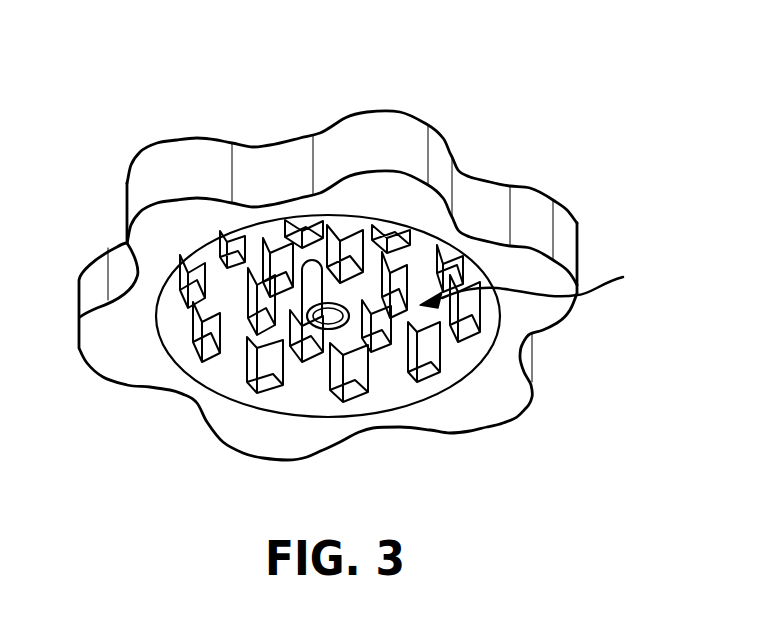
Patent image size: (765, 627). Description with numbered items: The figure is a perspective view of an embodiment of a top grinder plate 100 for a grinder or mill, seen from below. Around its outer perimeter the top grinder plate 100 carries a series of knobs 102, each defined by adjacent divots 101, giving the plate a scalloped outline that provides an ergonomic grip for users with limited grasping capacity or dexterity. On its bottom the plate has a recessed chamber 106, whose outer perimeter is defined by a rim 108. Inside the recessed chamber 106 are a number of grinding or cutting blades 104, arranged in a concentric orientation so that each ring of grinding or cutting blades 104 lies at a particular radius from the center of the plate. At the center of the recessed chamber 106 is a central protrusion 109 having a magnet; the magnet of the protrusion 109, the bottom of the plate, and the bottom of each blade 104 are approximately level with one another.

The top grinder plate 100 is at (147, 150).
The divots 101 is at (273, 167).
The knobs 102 is at (383, 132).
The grinding or cutting blades 104 is at (250, 304).
The recessed chamber 106 is at (545, 280).
The rim 108 is at (383, 392).
The central protrusion 109 is at (320, 318).